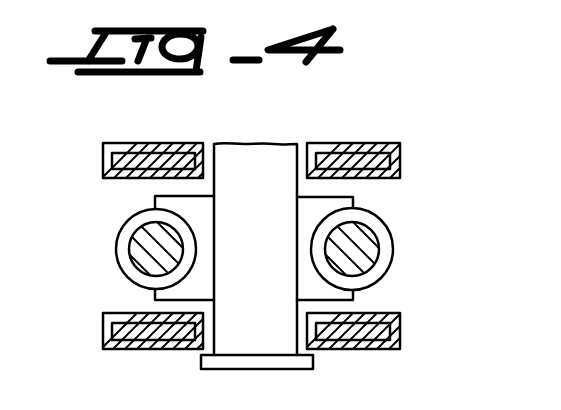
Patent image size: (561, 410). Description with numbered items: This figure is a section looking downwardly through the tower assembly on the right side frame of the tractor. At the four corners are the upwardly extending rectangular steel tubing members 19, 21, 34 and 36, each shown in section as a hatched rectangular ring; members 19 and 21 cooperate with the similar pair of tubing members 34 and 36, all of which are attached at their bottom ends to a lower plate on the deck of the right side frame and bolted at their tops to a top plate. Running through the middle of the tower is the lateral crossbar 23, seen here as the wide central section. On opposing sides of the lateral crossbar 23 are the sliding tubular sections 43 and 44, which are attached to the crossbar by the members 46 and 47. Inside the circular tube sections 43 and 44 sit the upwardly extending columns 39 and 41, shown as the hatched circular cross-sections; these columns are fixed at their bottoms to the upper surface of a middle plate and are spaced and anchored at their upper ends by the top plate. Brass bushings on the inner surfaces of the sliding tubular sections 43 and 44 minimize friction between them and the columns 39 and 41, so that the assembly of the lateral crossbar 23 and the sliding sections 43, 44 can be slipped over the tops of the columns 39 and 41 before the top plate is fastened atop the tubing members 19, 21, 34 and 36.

The steel tubing member 19 is at (118, 350).
The steel tubing member 21 is at (383, 350).
The lateral crossbar 23 is at (248, 152).
The steel tubing member 34 is at (137, 142).
The steel tubing member 36 is at (355, 143).
The upwardly extending column 39 is at (140, 237).
The upwardly extending column 41 is at (365, 243).
The sliding tubular section 43 is at (118, 252).
The sliding tubular section 44 is at (392, 262).
The attaching member 46 is at (155, 197).
The attaching member 47 is at (353, 200).